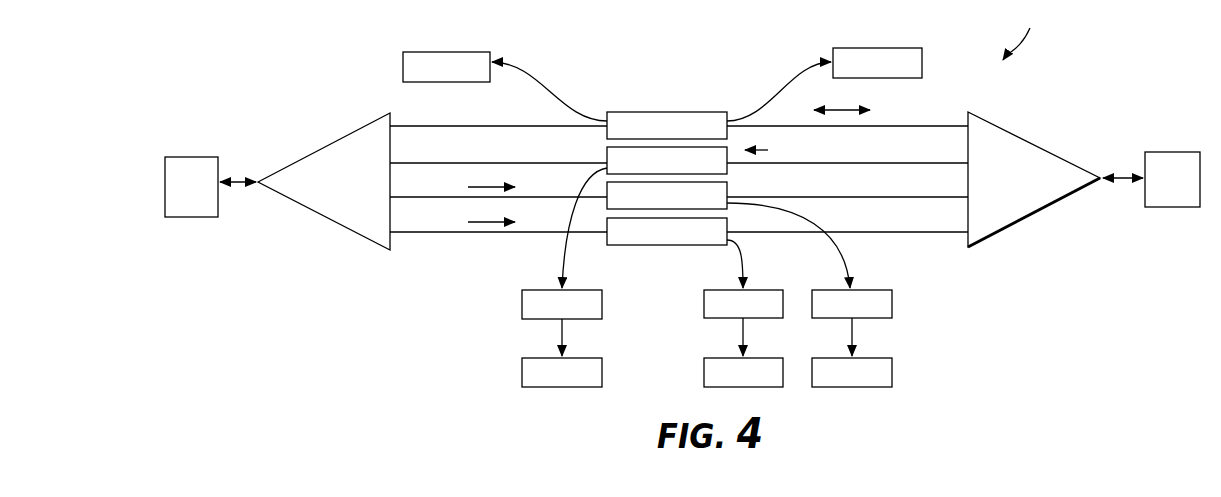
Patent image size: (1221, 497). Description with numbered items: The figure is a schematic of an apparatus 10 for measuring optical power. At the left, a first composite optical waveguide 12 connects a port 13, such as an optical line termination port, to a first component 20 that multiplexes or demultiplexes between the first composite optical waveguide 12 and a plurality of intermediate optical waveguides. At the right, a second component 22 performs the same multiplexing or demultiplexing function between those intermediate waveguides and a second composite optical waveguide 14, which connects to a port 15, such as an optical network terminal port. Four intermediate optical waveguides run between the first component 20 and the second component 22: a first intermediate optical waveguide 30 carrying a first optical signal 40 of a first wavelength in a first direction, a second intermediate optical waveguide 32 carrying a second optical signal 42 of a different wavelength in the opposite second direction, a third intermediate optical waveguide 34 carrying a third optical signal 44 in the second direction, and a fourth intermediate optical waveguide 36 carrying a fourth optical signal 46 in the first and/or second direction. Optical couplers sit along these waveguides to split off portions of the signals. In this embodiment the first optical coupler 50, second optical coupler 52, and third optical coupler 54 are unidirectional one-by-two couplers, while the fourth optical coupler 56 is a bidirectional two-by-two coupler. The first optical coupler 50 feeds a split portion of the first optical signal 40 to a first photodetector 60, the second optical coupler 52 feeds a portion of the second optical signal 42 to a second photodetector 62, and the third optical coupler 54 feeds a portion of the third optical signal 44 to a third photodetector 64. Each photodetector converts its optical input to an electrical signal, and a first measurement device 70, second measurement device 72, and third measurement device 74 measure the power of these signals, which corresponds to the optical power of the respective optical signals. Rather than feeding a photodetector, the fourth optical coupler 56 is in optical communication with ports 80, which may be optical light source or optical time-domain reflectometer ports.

The apparatus 10 is at (1027, 32).
The first composite optical waveguide 12 is at (240, 180).
The port 13 is at (190, 157).
The second composite optical waveguide 14 is at (1120, 176).
The port 15 is at (1185, 152).
The first component 20 is at (324, 181).
The second component 22 is at (1034, 179).
The first intermediate optical waveguide 30 is at (460, 163).
The second intermediate optical waveguide 32 is at (532, 197).
The third intermediate optical waveguide 34 is at (525, 232).
The fourth intermediate optical waveguide 36 is at (468, 126).
The first optical signal 40 is at (768, 150).
The second optical signal 42 is at (490, 186).
The third optical signal 44 is at (490, 220).
The fourth optical signal 46 is at (852, 110).
The first optical coupler 50 is at (607, 152).
The second optical coupler 52 is at (727, 192).
The third optical coupler 54 is at (658, 246).
The fourth optical coupler 56 is at (695, 112).
The first photodetector 60 is at (564, 243).
The second photodetector 62 is at (809, 260).
The third photodetector 64 is at (743, 279).
The first measurement device 70 is at (562, 353).
The second measurement device 72 is at (852, 352).
The third measurement device 74 is at (743, 352).
The port 80 is at (662, 84).